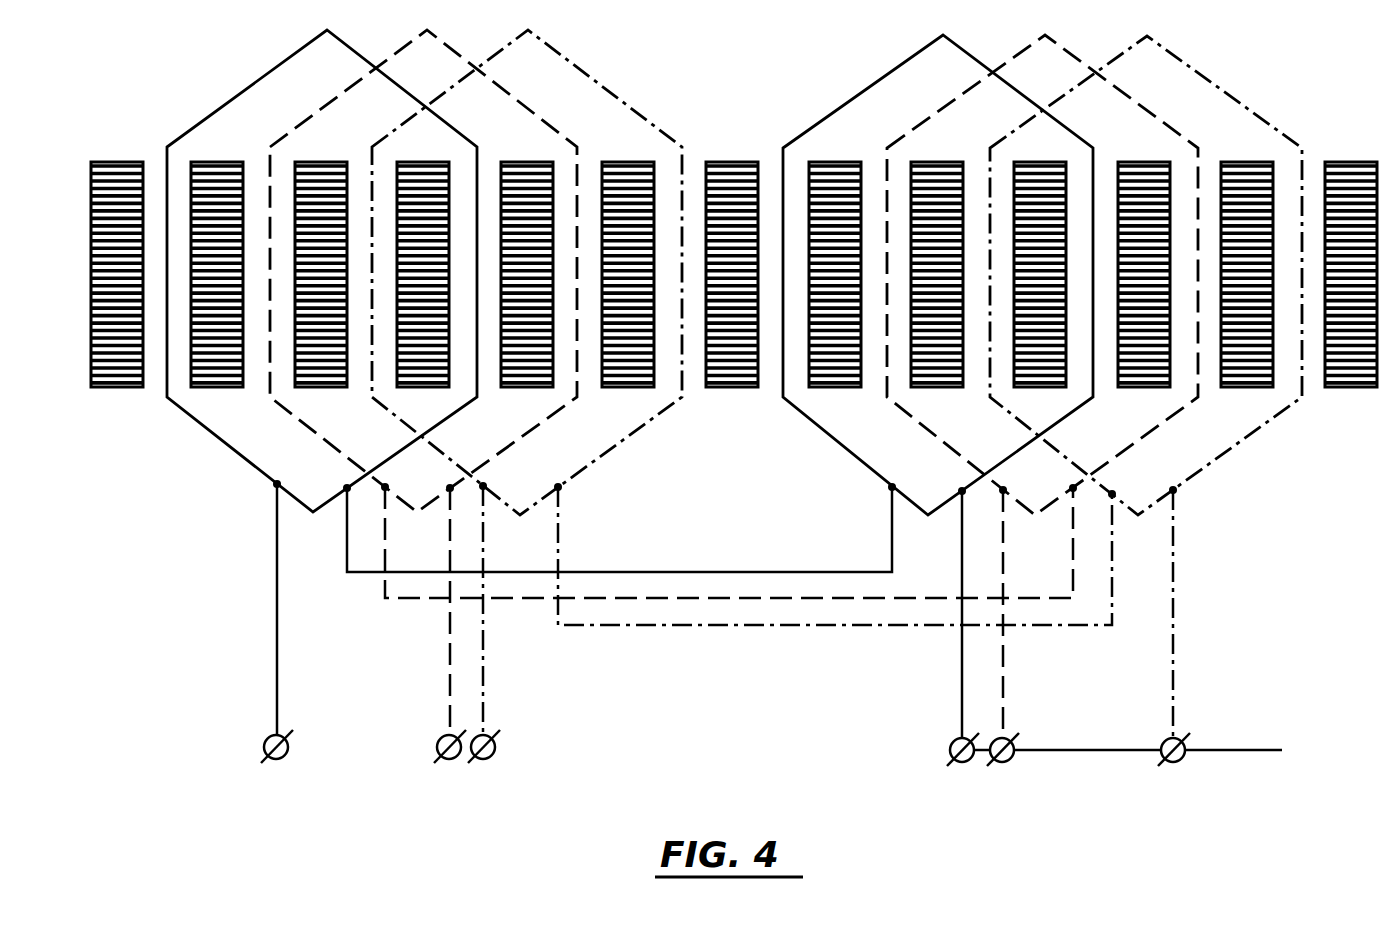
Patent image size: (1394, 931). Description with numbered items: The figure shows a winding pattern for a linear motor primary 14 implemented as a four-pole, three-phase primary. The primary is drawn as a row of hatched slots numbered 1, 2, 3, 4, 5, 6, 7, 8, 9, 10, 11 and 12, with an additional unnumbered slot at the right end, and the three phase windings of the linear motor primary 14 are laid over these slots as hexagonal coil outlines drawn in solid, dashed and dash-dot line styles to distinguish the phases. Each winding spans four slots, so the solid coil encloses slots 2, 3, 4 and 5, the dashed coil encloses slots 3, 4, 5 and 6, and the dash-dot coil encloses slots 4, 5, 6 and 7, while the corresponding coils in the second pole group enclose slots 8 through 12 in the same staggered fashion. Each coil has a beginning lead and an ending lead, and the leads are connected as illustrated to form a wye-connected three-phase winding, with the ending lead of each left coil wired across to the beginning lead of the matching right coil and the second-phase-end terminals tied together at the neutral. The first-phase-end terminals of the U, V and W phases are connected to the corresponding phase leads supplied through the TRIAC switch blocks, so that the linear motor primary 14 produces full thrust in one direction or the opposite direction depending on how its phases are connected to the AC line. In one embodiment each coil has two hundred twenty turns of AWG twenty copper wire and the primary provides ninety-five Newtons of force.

The slot 1 is at (117, 261).
The slot 2 is at (217, 261).
The slot 3 is at (321, 261).
The slot 4 is at (423, 261).
The slot 5 is at (527, 261).
The slot 6 is at (628, 261).
The slot 7 is at (732, 261).
The slot 8 is at (835, 261).
The slot 9 is at (937, 261).
The slot 10 is at (1040, 261).
The slot 11 is at (1144, 261).
The slot 12 is at (1247, 261).
The linear motor primary 14 is at (1252, 55).